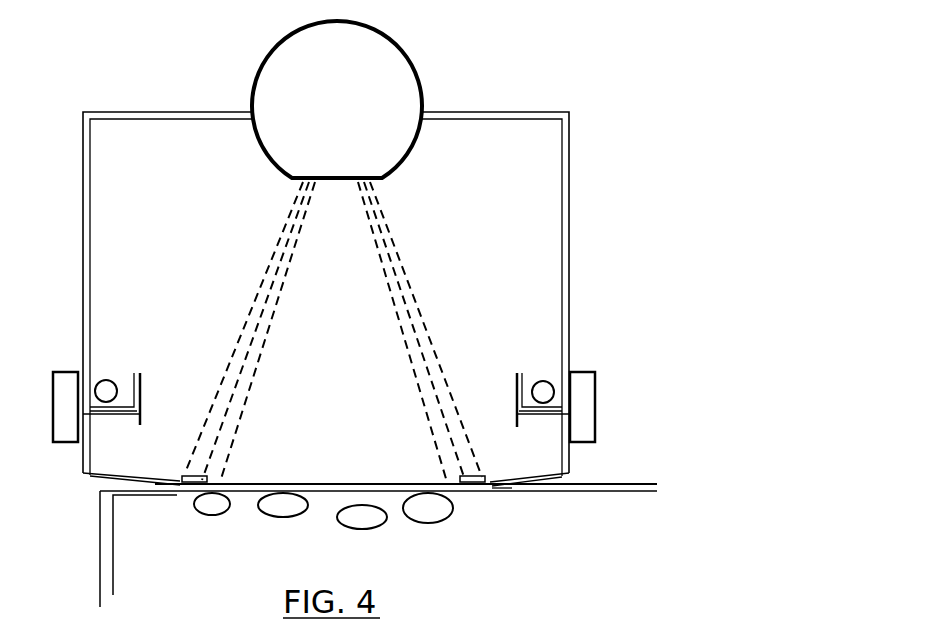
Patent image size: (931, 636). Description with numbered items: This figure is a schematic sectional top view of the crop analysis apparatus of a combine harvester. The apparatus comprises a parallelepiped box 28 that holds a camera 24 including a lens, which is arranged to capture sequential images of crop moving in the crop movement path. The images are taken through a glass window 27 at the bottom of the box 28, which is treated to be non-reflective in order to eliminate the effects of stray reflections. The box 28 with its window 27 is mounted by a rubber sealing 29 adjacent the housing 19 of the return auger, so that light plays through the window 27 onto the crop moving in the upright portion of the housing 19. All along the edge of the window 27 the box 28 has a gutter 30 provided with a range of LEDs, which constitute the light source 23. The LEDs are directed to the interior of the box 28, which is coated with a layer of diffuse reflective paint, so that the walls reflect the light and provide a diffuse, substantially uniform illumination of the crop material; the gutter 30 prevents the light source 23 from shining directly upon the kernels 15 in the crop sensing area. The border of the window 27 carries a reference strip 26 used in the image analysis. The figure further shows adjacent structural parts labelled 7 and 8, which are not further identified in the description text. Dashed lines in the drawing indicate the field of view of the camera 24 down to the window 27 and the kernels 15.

The camera 24 is at (415, 63).
The box 28 is at (500, 111).
The gutter 30 is at (135, 372).
The light source 23 is at (107, 380).
The rubber sealing 29 is at (92, 480).
The frame 7 is at (569, 458).
The plate 8 is at (498, 490).
The reference strip 26 is at (193, 483).
The glass window 27 is at (244, 492).
The housing 19 is at (107, 563).
The kernels 15 is at (290, 517).